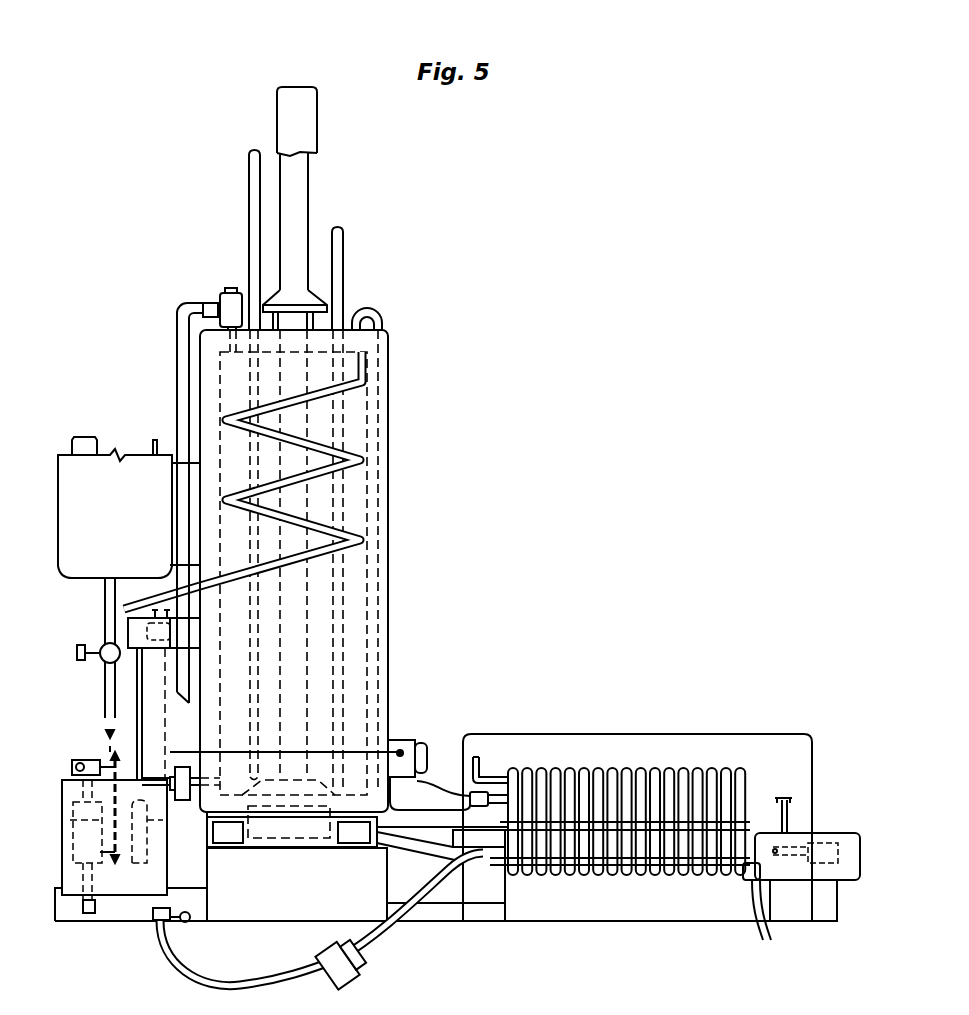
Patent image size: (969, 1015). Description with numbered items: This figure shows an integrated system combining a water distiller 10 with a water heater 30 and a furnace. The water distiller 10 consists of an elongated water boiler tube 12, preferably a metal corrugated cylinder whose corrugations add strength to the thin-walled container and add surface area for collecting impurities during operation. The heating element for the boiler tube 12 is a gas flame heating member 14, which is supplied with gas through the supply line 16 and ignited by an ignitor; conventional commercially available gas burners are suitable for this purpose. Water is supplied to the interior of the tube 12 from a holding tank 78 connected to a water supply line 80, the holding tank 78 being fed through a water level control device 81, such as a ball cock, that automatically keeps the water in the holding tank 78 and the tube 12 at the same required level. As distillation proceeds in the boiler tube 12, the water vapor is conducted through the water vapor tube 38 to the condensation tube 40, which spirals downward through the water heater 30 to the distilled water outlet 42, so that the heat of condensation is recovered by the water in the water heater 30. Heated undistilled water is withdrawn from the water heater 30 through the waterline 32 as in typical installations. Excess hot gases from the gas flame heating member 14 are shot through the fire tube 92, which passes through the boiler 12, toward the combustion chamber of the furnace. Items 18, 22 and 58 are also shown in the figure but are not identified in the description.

The water distiller 10 is at (698, 735).
The water boiler tube 12 is at (607, 772).
The gas flame heating member 14 is at (845, 880).
The supply line 16 is at (787, 815).
The control unit 18 is at (820, 843).
The flexible hose 22 is at (378, 942).
The water heater 30 is at (387, 557).
The waterline 32 is at (338, 277).
The water vapor tube 38 is at (430, 773).
The condensation tube 40 is at (350, 457).
The distilled water outlet 42 is at (120, 610).
The fitting 58 is at (177, 772).
The holding tank 78 is at (75, 857).
The water supply line 80 is at (90, 925).
The water level control device 81 is at (75, 815).
The fire tube 92 is at (417, 833).